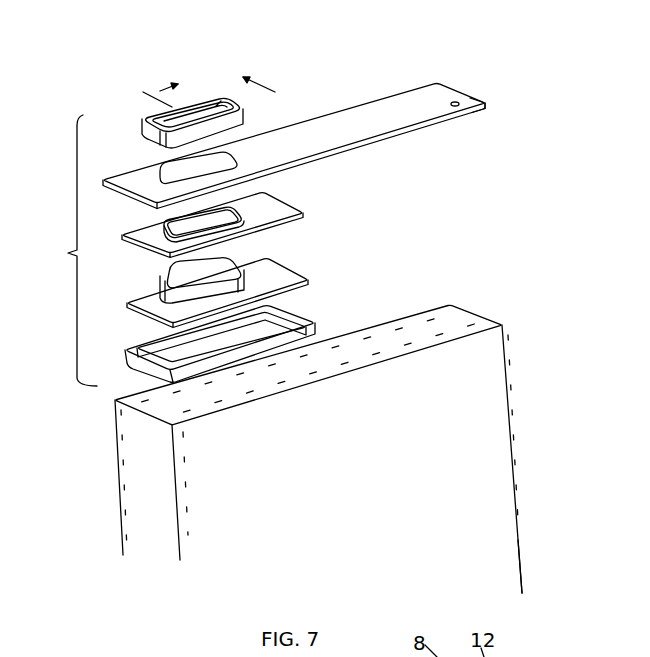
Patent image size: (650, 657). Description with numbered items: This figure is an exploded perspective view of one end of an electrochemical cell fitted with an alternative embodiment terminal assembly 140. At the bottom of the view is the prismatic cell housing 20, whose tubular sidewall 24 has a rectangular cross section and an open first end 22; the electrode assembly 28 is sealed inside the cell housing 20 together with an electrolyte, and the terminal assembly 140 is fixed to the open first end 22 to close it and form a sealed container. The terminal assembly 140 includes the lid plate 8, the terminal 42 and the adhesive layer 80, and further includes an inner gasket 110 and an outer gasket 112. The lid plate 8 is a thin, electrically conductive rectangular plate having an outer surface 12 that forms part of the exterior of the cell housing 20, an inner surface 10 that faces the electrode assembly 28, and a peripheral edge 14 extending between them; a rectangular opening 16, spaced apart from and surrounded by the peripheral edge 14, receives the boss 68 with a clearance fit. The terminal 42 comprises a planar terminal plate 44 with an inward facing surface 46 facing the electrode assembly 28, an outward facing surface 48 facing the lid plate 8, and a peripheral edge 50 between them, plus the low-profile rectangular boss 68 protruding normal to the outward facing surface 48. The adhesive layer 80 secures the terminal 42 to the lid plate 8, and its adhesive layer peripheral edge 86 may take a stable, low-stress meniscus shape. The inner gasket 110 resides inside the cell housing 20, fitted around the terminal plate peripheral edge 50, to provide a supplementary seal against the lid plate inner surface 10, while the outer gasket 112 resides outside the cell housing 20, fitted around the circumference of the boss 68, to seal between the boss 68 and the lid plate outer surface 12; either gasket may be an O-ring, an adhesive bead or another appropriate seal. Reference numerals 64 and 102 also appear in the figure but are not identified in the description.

The lid plate 8 is at (455, 72).
The inner surface 10 is at (391, 134).
The outer surface 12 is at (311, 135).
The peripheral edge 14 is at (472, 112).
The opening 16 is at (166, 176).
The cell housing 20 is at (350, 443).
The open first end 22 is at (487, 320).
The tubular sidewall 24 is at (508, 562).
The electrode assembly 28 is at (508, 458).
The terminal 42 is at (223, 279).
The terminal plate 44 is at (223, 279).
The inward facing surface 46 is at (223, 290).
The outward facing surface 48 is at (223, 290).
The peripheral edge 50 is at (199, 290).
The electronic component 64 is at (184, 277).
The boss 68 is at (163, 290).
The adhesive layer 80 is at (237, 217).
The adhesive layer peripheral edge 86 is at (303, 220).
The cover assembly 102 is at (172, 89).
The inner gasket 110 is at (314, 333).
The outer gasket 112 is at (146, 128).
The alternative embodiment terminal assembly 140 is at (60, 250).